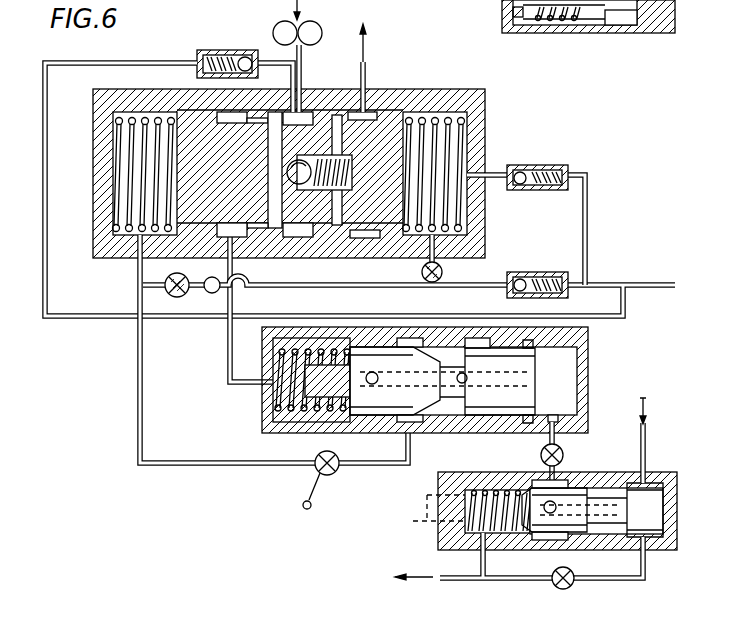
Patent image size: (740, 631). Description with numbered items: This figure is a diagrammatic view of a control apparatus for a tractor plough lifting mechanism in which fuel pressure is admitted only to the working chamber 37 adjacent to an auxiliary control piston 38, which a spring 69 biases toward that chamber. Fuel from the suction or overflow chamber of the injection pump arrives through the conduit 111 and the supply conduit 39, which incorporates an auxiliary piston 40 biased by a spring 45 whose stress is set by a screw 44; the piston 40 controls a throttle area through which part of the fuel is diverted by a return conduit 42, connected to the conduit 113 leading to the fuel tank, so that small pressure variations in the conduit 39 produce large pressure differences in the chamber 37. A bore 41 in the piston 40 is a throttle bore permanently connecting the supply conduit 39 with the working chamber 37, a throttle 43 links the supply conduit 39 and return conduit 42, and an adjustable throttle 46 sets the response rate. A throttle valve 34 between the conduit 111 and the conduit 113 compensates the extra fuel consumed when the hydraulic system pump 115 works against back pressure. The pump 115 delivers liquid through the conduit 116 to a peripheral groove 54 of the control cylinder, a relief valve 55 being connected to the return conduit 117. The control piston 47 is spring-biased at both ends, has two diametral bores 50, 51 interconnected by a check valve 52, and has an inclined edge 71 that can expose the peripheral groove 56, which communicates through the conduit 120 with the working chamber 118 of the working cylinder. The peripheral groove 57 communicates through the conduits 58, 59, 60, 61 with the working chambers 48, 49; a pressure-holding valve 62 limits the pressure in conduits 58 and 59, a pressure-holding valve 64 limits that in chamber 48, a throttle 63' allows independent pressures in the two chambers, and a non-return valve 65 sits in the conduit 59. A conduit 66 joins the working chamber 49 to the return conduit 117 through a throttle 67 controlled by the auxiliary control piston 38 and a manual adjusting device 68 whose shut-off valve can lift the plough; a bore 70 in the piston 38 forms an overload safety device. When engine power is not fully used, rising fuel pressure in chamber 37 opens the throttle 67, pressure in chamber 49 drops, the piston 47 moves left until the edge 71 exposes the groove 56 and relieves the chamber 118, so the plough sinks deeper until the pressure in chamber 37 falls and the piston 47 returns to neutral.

The throttle valve 34 is at (568, 7).
The working chamber 37 is at (567, 388).
The auxiliary control piston 38 is at (523, 372).
The supply conduit 39 is at (647, 437).
The auxiliary piston 40 is at (573, 495).
The bore 41 is at (603, 493).
The return conduit 42 is at (450, 580).
The throttle 43 is at (555, 584).
The screw 44 is at (515, 511).
The spring 45 is at (492, 477).
The adjustable throttle 46 is at (541, 455).
The control piston 47 is at (392, 140).
The working chamber 48 is at (447, 117).
The working chamber 49 is at (115, 117).
The diametral bore 50 is at (275, 232).
The diametral bore 51 is at (337, 120).
The check valve 52 is at (299, 185).
The peripheral groove 54 is at (293, 117).
The relief valve 55 is at (232, 50).
The peripheral groove 56 is at (367, 115).
The peripheral groove 57 is at (217, 113).
The conduit 58 is at (240, 288).
The conduit 59 is at (330, 287).
The conduit 60 is at (138, 297).
The conduit 61 is at (437, 258).
The pressure-holding valve 62 is at (522, 272).
The throttle 63' is at (410, 272).
The pressure-holding valve 64 is at (522, 165).
The non-return valve 65 is at (212, 294).
The conduit 66 is at (138, 446).
The throttle 67 is at (433, 433).
The manual adjusting device 68 is at (331, 480).
The spring 69 is at (177, 298).
The bore 70 is at (393, 382).
The inclined edge 71 is at (403, 228).
The conduit 111 is at (669, 408).
The conduit 113 is at (415, 589).
The hydraulic system pump 115 is at (283, 31).
The conduit 116 is at (302, 62).
The return conduit 117 is at (648, 285).
The working chamber 118 is at (389, 43).
The conduit 120 is at (366, 70).